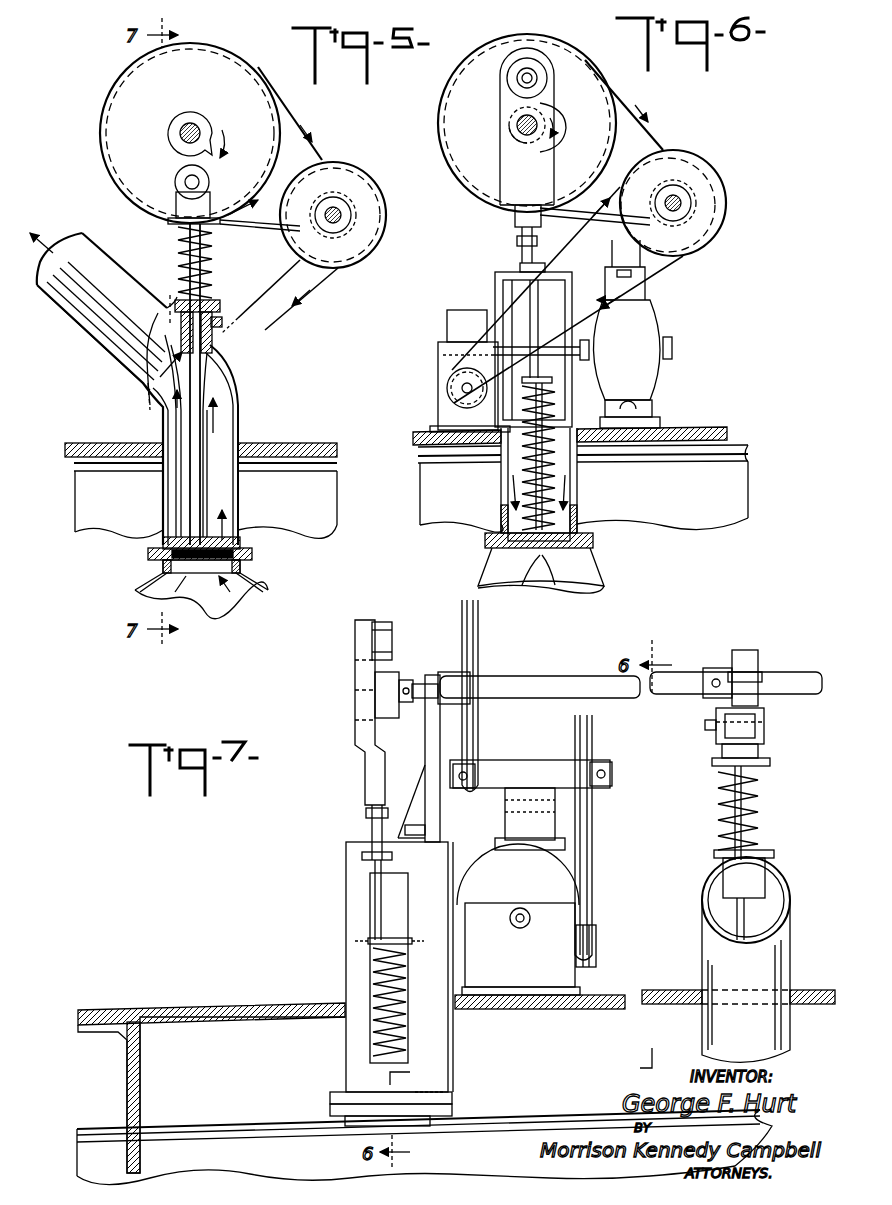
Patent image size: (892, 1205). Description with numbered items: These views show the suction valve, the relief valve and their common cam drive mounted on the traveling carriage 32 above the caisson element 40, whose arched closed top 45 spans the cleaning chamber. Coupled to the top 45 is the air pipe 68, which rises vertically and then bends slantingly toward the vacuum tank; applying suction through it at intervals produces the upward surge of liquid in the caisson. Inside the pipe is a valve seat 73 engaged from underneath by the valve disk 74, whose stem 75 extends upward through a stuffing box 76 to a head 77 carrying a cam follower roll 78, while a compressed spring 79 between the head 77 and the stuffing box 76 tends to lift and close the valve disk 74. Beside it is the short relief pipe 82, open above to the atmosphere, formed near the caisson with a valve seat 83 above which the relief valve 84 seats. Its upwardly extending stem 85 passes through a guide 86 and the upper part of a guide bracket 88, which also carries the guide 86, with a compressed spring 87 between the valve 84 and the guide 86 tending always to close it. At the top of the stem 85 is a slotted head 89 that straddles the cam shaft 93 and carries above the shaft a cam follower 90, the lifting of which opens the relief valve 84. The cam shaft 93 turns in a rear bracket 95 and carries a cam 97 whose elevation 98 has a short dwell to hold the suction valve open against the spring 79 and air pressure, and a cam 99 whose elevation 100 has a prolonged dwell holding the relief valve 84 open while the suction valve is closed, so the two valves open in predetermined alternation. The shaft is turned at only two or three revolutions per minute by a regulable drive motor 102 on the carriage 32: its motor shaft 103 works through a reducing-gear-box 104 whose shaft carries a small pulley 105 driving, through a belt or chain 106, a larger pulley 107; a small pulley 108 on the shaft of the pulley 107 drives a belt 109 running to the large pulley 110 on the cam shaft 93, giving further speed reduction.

In FIG. 5, the traveling carriage 32 is at (282, 440).
In FIG. 6, the traveling carriage 32 is at (700, 428).
In FIG. 7, the traveling carriage 32 is at (164, 998).
In FIG. 5, the caisson element 40 is at (218, 594).
In FIG. 6, the caisson element 40 is at (568, 570).
In FIG. 7, the caisson element 40 is at (186, 1133).
In FIG. 5, the closed top 45 is at (256, 583).
In FIG. 6, the closed top 45 is at (482, 572).
In FIG. 5, the air pipe 68 is at (72, 320).
In FIG. 7, the air pipe 68 is at (776, 960).
In FIG. 5, the valve seat 73 is at (250, 550).
In FIG. 5, the valve disk 74 is at (210, 562).
In FIG. 7, the stem 75 is at (746, 916).
In FIG. 5, the stuffing box 76 is at (222, 320).
In FIG. 7, the stuffing box 76 is at (755, 876).
In FIG. 5, the head 77 is at (170, 225).
In FIG. 7, the head 77 is at (745, 764).
In FIG. 5, the cam follower roll 78 is at (175, 183).
In FIG. 7, the cam follower roll 78 is at (757, 745).
In FIG. 5, the compressed spring 79 is at (178, 256).
In FIG. 7, the compressed spring 79 is at (752, 810).
In FIG. 6, the relief pipe 82 is at (580, 513).
In FIG. 7, the relief pipe 82 is at (355, 1068).
In FIG. 6, the valve seat 83 is at (590, 536).
In FIG. 6, the relief valve 84 is at (535, 568).
In FIG. 6, the stem 85 is at (520, 251).
In FIG. 7, the stem 85 is at (372, 895).
In FIG. 6, the guide 86 is at (552, 383).
In FIG. 7, the guide 86 is at (396, 944).
In FIG. 6, the compressed spring 87 is at (518, 463).
In FIG. 7, the compressed spring 87 is at (372, 970).
In FIG. 6, the guide bracket 88 is at (568, 277).
In FIG. 7, the guide bracket 88 is at (346, 866).
In FIG. 6, the head 89 is at (510, 188).
In FIG. 7, the head 89 is at (365, 754).
In FIG. 6, the cam follower 90 is at (510, 82).
In FIG. 7, the cam follower 90 is at (392, 645).
In FIG. 5, the cam shaft 93 is at (180, 134).
In FIG. 6, the cam shaft 93 is at (518, 125).
In FIG. 7, the cam shaft 93 is at (355, 690).
In FIG. 7, the rear bracket 95 is at (430, 737).
In FIG. 5, the cam 97 is at (190, 115).
In FIG. 7, the cam 97 is at (745, 670).
In FIG. 5, the elevation 98 is at (216, 162).
In FIG. 6, the cam 99 is at (518, 140).
In FIG. 7, the cam 99 is at (396, 678).
In FIG. 6, the elevation 100 is at (563, 128).
In FIG. 6, the drive motor 102 is at (645, 370).
In FIG. 7, the drive motor 102 is at (518, 874).
In FIG. 6, the motor shaft 103 is at (672, 346).
In FIG. 7, the motor shaft 103 is at (511, 925).
In FIG. 6, the reducing-gear-box 104 is at (447, 353).
In FIG. 7, the reducing-gear-box 104 is at (566, 949).
In FIG. 6, the small pulley 105 is at (448, 388).
In FIG. 7, the small pulley 105 is at (594, 952).
In FIG. 5, the belt or chain 106 is at (332, 284).
In FIG. 6, the belt or chain 106 is at (672, 258).
In FIG. 7, the belt or chain 106 is at (584, 862).
In FIG. 5, the larger pulley 107 is at (372, 208).
In FIG. 6, the larger pulley 107 is at (712, 205).
In FIG. 7, the larger pulley 107 is at (586, 745).
In FIG. 5, the small pulley 108 is at (345, 200).
In FIG. 6, the small pulley 108 is at (695, 193).
In FIG. 7, the small pulley 108 is at (480, 770).
In FIG. 5, the belt 109 is at (316, 150).
In FIG. 6, the belt 109 is at (655, 140).
In FIG. 7, the belt 109 is at (476, 660).
In FIG. 5, the large pulley 110 is at (243, 76).
In FIG. 6, the large pulley 110 is at (575, 70).
In FIG. 7, the large pulley 110 is at (478, 642).